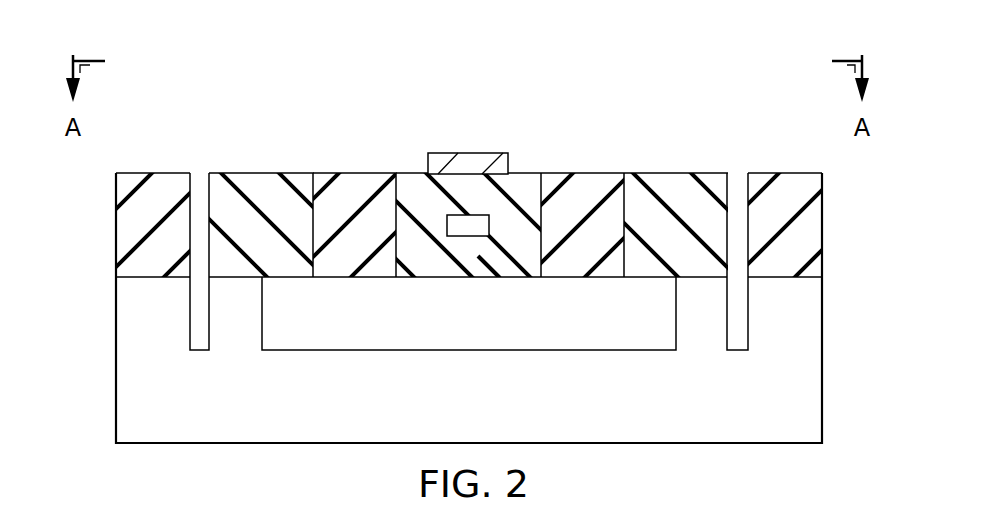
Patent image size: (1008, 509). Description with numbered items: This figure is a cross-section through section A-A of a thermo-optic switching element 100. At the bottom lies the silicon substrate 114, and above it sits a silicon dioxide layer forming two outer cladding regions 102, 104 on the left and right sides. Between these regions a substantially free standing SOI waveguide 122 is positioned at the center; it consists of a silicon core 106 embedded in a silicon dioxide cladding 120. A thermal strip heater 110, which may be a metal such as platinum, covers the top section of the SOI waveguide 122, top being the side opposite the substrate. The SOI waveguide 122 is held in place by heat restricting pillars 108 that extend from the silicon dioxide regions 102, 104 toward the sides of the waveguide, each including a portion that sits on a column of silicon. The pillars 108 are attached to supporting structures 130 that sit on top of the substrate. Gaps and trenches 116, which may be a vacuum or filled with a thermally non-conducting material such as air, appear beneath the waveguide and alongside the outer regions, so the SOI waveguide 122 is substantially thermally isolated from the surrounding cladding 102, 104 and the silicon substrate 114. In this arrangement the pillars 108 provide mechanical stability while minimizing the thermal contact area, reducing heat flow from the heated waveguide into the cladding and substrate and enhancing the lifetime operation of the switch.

The thermo-optic switching element 100 is at (616, 65).
The silicon dioxide layer 102 is at (118, 223).
The silicon dioxide layer 104 is at (822, 223).
The silicon core 106 is at (468, 237).
The heat restricting pillars 108 is at (355, 178).
The thermal strip heater 110 is at (467, 160).
The silicon substrate 114 is at (449, 408).
The gaps and trenches 116 is at (196, 168).
The silicon dioxide cladding 120 is at (490, 268).
The SOI waveguide 122 is at (412, 178).
The supporting structures 130 is at (262, 177).